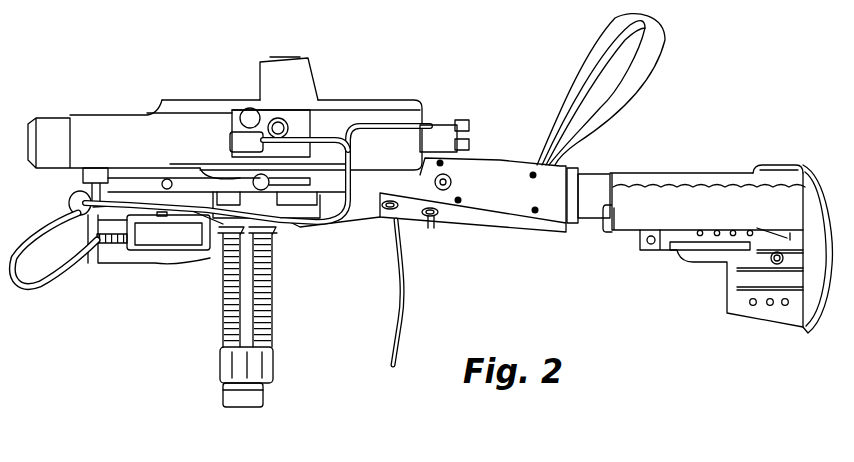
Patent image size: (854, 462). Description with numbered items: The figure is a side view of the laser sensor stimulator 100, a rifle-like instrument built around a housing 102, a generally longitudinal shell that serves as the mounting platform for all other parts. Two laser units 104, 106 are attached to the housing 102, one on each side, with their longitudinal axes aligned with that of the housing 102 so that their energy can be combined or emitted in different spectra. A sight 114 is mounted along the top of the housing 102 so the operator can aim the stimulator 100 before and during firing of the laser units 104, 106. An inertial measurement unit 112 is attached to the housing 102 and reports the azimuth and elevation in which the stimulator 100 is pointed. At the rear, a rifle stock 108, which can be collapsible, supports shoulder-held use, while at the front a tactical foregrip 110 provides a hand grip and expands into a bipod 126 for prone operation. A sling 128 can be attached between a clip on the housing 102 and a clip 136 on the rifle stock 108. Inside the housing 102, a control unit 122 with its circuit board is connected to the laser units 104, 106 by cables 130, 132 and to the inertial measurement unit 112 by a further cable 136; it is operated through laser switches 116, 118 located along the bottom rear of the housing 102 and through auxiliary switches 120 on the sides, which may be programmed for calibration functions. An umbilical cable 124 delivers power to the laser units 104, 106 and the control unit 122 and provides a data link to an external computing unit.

The laser sensor stimulator 100 is at (98, 40).
The housing 102 is at (500, 194).
The laser unit 104 is at (98, 263).
The laser unit 106 is at (52, 126).
The rifle stock 108 is at (753, 281).
The tactical foregrip 110 is at (272, 301).
The inertial measurement unit 112 is at (157, 250).
The sight 114 is at (293, 76).
The laser switch 116 is at (393, 222).
The laser switch 118 is at (431, 229).
The auxiliary switch 120 is at (450, 180).
The control unit 122 is at (200, 180).
The umbilical cable 124 is at (392, 334).
The bipod 126 is at (235, 398).
The sling 128 is at (664, 50).
The cable 130 is at (314, 226).
The cable 132 is at (134, 265).
The clip 136 is at (15, 290).